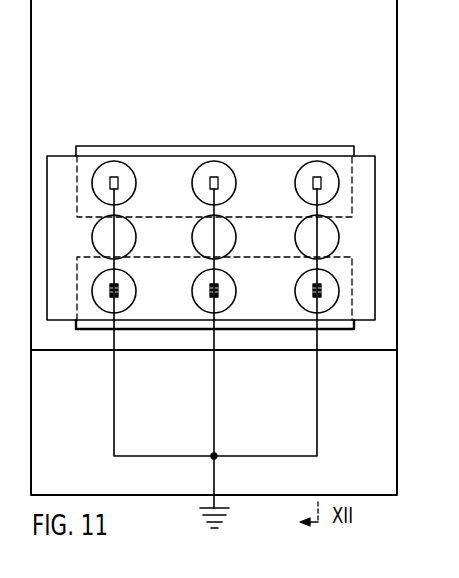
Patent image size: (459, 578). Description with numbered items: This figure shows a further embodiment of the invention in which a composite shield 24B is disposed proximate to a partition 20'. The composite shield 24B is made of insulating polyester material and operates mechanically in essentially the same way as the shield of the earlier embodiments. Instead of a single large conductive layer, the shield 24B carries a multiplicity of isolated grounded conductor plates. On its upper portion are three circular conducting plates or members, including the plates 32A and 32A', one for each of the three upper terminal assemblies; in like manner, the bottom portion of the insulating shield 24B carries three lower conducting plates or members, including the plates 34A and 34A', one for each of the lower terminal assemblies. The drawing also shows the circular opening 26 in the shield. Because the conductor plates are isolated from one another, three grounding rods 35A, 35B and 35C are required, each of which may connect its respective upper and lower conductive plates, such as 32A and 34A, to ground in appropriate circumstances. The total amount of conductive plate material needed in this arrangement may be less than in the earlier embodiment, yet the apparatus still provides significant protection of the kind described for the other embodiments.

The partition 20' is at (233, 247).
The composite shield 24B is at (366, 156).
The circular opening 26 is at (330, 248).
The circular conducting plate 32A is at (317, 157).
The circular conducting plate 32A' is at (218, 157).
The lower conducting plate 34A is at (325, 328).
The lower conducting plate 34A' is at (227, 328).
The grounding rod 35A is at (316, 434).
The grounding rod 35B is at (213, 427).
The grounding rod 35C is at (113, 430).